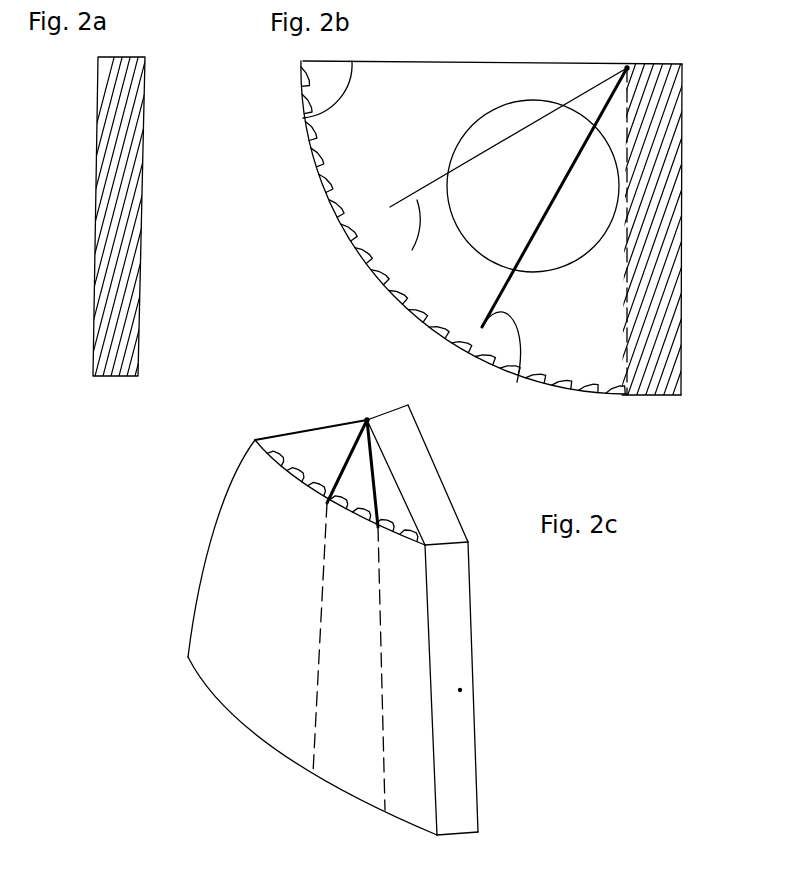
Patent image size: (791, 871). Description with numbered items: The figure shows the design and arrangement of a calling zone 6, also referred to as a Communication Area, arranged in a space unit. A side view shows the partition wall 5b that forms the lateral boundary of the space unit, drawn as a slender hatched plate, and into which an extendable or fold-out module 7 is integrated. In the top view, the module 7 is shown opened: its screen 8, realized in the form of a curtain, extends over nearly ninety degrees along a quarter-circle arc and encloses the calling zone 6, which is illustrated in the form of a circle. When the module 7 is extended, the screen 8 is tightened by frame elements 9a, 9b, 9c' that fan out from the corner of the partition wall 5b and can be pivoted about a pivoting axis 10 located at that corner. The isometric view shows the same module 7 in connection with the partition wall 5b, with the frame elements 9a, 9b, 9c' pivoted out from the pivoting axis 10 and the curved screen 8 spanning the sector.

In FIG. 2A, the partition wall 5b is at (93, 154).
In FIG. 2B, the partition wall 5b is at (643, 382).
In FIG. 2C, the partition wall 5b is at (460, 690).
In FIG. 2B, the calling zone 6 is at (521, 198).
In FIG. 2B, the module 7 is at (358, 206).
In FIG. 2C, the module 7 is at (194, 708).
In FIG. 2B, the screen 8 is at (457, 306).
In FIG. 2C, the screen 8 is at (292, 457).
In FIG. 2B, the frame element 9a is at (517, 382).
In FIG. 2C, the frame element 9a is at (377, 497).
In FIG. 2B, the frame element 9b is at (413, 252).
In FIG. 2C, the frame element 9b is at (347, 458).
In FIG. 2B, the frame element 9c' is at (443, 134).
In FIG. 2C, the frame element 9c' is at (249, 406).
In FIG. 2B, the pivoting axis 10 is at (627, 68).
In FIG. 2C, the pivoting axis 10 is at (367, 420).